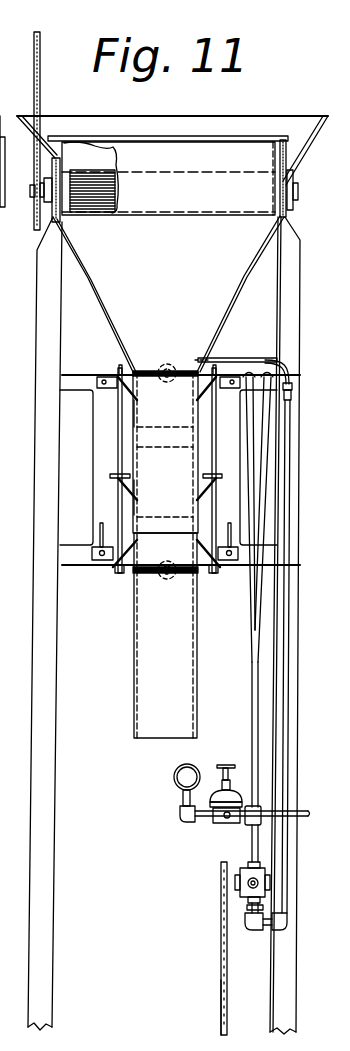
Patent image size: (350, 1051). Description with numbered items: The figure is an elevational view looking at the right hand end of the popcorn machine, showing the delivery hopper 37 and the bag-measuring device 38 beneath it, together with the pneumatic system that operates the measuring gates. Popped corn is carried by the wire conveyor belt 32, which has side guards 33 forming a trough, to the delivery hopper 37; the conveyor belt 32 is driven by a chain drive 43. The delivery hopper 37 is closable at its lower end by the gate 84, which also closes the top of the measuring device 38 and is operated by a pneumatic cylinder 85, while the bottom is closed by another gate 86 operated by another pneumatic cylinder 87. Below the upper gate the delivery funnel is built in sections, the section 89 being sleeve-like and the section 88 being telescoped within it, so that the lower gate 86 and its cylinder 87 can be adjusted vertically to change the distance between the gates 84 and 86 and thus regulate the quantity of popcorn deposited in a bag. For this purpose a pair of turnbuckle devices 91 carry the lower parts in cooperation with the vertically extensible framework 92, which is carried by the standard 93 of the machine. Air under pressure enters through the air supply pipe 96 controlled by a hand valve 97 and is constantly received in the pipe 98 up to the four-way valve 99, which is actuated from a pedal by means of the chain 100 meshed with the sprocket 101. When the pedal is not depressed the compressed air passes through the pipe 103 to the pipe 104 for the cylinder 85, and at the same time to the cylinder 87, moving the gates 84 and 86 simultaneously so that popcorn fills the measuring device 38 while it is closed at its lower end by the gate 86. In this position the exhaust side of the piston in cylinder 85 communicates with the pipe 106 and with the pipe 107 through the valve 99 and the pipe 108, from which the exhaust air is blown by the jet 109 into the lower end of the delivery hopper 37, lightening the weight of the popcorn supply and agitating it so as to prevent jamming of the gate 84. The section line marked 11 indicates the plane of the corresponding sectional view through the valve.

The section line 11- 11 is at (253, 739).
The wire conveyor belt 32 is at (106, 232).
The side guards 33 is at (30, 114).
The delivery hopper 37 is at (164, 192).
The bag-measuring device 38 is at (165, 555).
The chain drive 43 is at (40, 78).
The gate 84 is at (146, 370).
The pneumatic cylinder 85 is at (168, 362).
The gate 86 is at (147, 574).
The pneumatic cylinder 87 is at (167, 581).
The funnel section 88 is at (150, 412).
The funnel section 89 is at (148, 500).
The turnbuckle devices 91 is at (117, 461).
The vertically extensible framework 92 is at (92, 559).
The standard 93 is at (291, 246).
The air supply pipe 96 is at (305, 813).
The hand valve 97 is at (215, 793).
The pipe 98 is at (250, 838).
The four-way valve 99 is at (243, 866).
The chain 100 is at (220, 981).
The sprocket 101 is at (221, 873).
The pipe 103 is at (257, 625).
The pipe 104 is at (281, 366).
The pipe 106 is at (270, 361).
The pipe 107 is at (249, 591).
The pipe 108 is at (285, 688).
The jet 109 is at (246, 357).